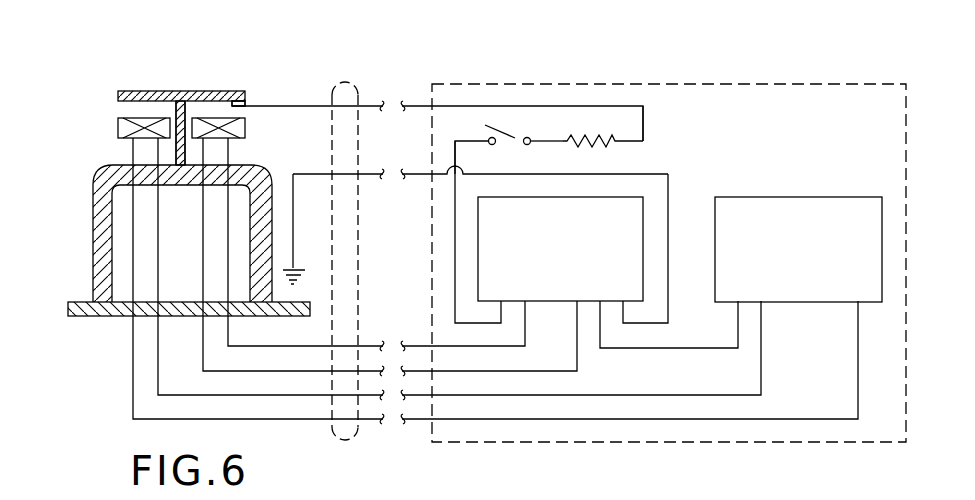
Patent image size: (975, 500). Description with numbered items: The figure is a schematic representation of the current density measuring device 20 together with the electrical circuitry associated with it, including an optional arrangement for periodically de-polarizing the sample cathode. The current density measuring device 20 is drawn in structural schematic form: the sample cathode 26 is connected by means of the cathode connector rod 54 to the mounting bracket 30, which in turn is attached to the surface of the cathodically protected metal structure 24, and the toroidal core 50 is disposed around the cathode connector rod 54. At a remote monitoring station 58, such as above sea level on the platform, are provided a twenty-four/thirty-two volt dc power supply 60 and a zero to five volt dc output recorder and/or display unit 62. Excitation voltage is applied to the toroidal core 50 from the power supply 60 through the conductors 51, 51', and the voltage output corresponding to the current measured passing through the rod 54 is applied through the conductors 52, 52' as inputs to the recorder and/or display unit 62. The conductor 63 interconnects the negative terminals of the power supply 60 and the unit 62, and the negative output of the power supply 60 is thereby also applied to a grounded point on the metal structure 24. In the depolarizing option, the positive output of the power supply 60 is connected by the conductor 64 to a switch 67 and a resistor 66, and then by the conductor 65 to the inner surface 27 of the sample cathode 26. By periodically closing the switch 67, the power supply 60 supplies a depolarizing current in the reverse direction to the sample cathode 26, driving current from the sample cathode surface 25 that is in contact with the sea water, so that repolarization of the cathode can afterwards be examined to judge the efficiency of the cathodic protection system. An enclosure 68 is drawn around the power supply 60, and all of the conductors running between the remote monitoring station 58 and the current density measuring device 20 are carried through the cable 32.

The current density measuring device 20 is at (117, 77).
The sample cathode surface 25 is at (163, 90).
The sample cathode 26 is at (237, 87).
The inner surface 27 is at (205, 90).
The cathode connector rod 54 is at (185, 150).
The toroidal core 50 is at (118, 124).
The mounting bracket 30 is at (93, 215).
The metal structure 24 is at (88, 312).
The conductor 51 is at (390, 254).
The conductor 51' is at (376, 242).
The conductor 52 is at (458, 278).
The conductor 52' is at (459, 266).
The cable 32 is at (357, 88).
The remote monitoring station 58 is at (815, 82).
The conductor 64 is at (468, 138).
The switch 67 is at (522, 135).
The resistor 66 is at (608, 135).
The conductor 65 is at (647, 125).
The power supply shield 68 is at (669, 210).
The power supply 60 is at (643, 205).
The conductor 63 is at (692, 347).
The output recorder and/or display unit 62 is at (800, 196).